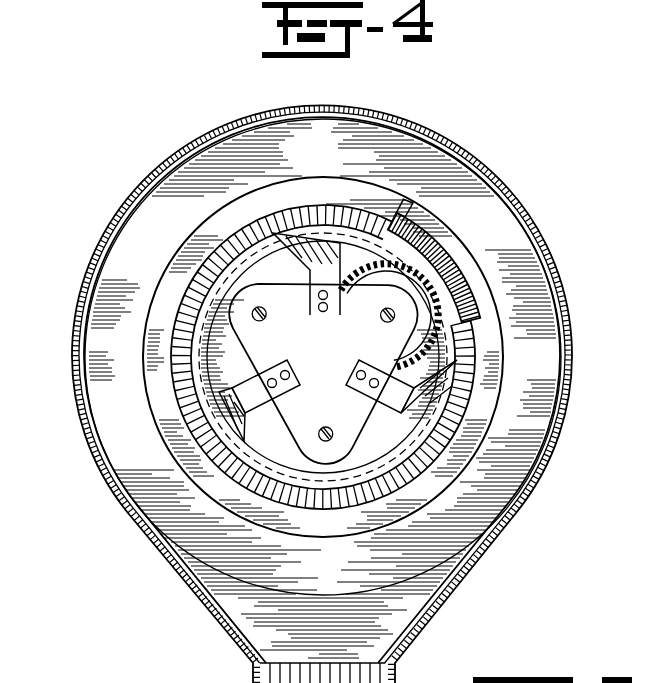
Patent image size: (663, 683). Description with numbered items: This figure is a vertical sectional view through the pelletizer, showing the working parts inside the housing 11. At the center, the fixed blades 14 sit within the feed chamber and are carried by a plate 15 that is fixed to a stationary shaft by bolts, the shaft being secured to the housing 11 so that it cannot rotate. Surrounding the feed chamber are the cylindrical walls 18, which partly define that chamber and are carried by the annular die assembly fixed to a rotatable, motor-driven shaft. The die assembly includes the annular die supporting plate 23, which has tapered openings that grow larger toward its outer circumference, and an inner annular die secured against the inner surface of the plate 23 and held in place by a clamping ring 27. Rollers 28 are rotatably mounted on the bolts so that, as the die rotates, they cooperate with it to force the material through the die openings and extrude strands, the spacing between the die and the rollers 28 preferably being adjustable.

The housing 11 is at (540, 224).
The fixed blades 14 is at (285, 362).
The plate 15 is at (262, 349).
The cylindrical walls 18 is at (363, 217).
The die supporting plate 23 is at (440, 227).
The clamping ring 27 is at (468, 443).
The rollers 28 is at (415, 268).